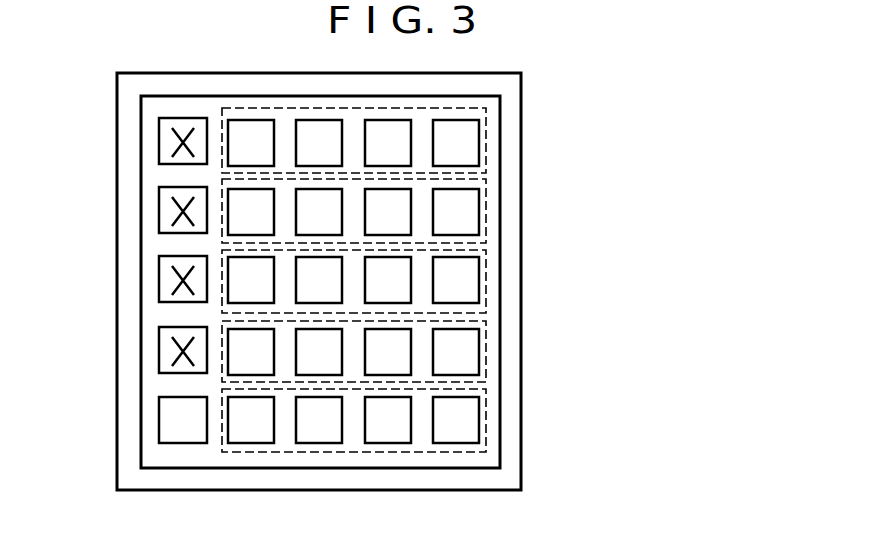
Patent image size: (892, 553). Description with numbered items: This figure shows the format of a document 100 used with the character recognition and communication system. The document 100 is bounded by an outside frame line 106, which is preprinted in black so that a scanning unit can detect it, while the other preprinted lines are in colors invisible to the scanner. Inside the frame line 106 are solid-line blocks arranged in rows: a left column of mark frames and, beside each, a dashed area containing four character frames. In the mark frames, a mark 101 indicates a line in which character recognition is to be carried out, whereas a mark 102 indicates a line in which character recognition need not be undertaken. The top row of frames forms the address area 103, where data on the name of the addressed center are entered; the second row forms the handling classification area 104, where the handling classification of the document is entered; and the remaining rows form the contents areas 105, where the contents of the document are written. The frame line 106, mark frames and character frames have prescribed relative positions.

The document 100 is at (472, 73).
The outside frame line 106 is at (500, 97).
The mark indicating a line in which character recognition is to be carried out 101 is at (162, 353).
The mark indicating a line in which character recognition need not be undertaken 102 is at (162, 420).
The address area frames 103 is at (486, 146).
The handling classification area frames 104 is at (486, 216).
The contents area frames 105 is at (486, 291).